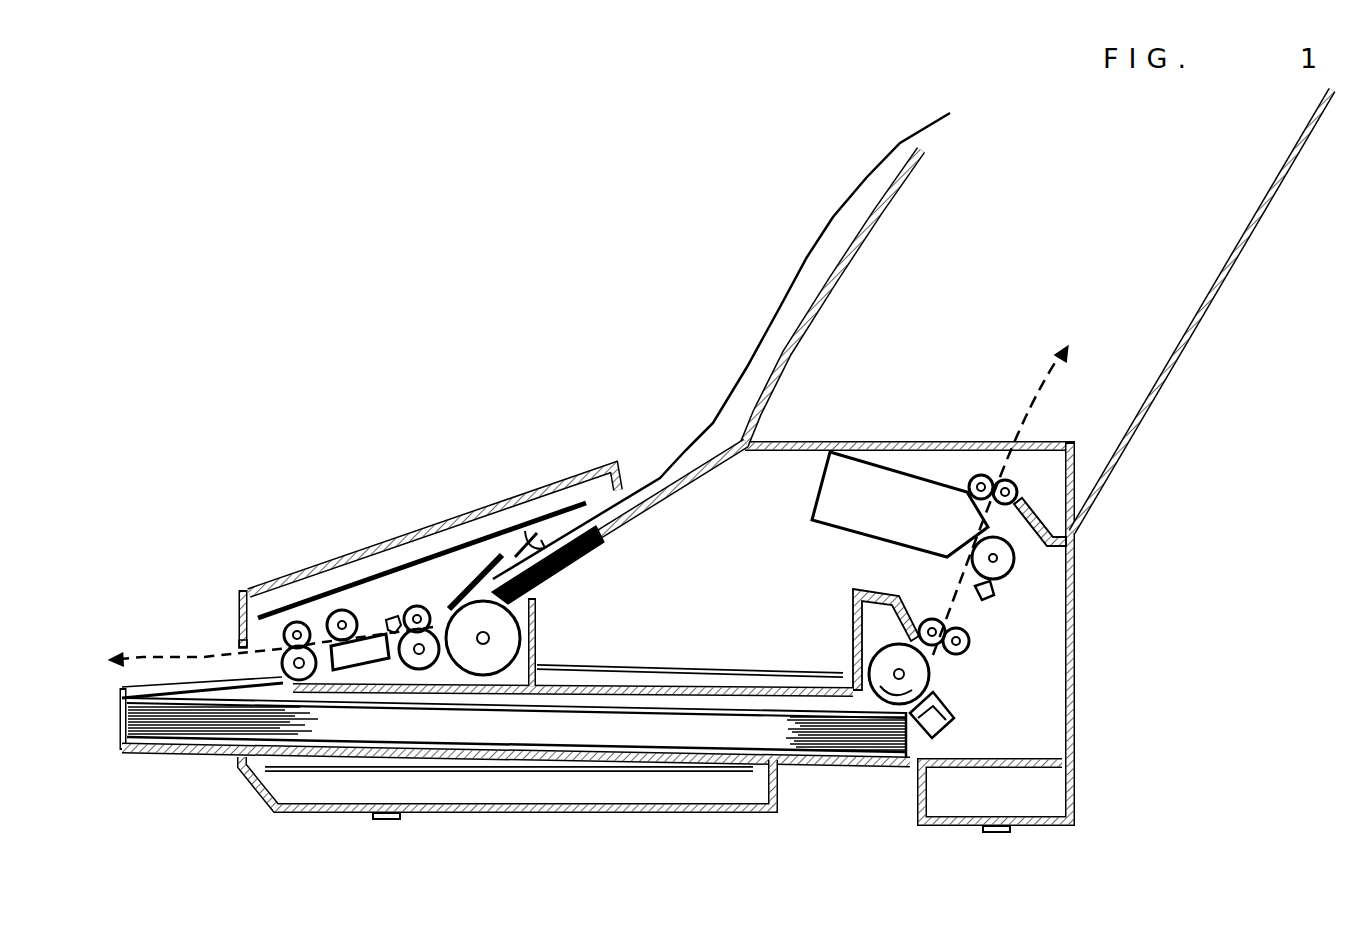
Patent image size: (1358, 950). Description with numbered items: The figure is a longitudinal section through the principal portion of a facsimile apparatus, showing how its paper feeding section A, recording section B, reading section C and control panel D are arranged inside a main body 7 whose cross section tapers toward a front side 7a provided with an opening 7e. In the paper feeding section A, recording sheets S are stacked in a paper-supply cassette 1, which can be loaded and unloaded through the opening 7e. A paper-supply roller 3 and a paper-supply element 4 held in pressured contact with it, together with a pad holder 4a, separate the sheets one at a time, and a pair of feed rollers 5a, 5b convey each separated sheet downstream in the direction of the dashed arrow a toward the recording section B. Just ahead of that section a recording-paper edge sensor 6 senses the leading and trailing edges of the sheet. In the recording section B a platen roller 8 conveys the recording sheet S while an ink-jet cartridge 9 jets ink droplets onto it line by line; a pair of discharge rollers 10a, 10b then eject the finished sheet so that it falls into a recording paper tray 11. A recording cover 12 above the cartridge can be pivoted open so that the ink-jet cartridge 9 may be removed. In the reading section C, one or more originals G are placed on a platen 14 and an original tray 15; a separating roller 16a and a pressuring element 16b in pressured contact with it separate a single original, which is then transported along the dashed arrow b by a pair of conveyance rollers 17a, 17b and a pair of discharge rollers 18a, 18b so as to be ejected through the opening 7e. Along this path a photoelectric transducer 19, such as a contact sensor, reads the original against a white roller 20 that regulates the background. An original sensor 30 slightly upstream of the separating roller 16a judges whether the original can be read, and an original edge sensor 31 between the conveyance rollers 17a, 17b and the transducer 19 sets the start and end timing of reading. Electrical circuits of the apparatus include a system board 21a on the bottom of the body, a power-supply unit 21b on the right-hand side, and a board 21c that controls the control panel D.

The paper-supply cassette 1 is at (489, 759).
The paper-supply roller 3 is at (1029, 677).
The paper-supply element 4 is at (1038, 753).
The pad holder 4a is at (1056, 725).
The feed roller 5a is at (1048, 620).
The feed roller 5b is at (1060, 646).
The recording-paper edge sensor 6 is at (1063, 582).
The main body 7 is at (507, 835).
The front side 7a is at (178, 604).
The opening 7e is at (162, 620).
The platen roller 8 is at (1073, 544).
The ink-jet cartridge 9 is at (900, 472).
The discharge roller 10a is at (1100, 468).
The discharge roller 10b is at (1118, 510).
The recording paper tray 11 is at (1202, 311).
The recording cover 12 is at (910, 587).
The platen 14 is at (672, 423).
The original tray 15 is at (833, 297).
The separating roller 16a is at (548, 502).
The pressuring element 16b is at (493, 502).
The conveyance roller 17a is at (438, 753).
The conveyance roller 17b is at (429, 513).
The discharge roller 18a is at (321, 762).
The discharge roller 18b is at (261, 560).
The photoelectric transducer 19 is at (344, 547).
The white roller 20 is at (327, 584).
The system board 21a is at (509, 832).
The power-supply unit 21b is at (573, 739).
The board for controlling the control panel 21c is at (373, 560).
The original sensor 30 is at (433, 512).
The original edge sensor 31 is at (398, 557).
The recording sheets S is at (516, 786).
The original G is at (721, 341).
The paper feeding section A is at (986, 907).
The recording section B is at (1013, 300).
The reading section C is at (367, 419).
The control panel D is at (280, 447).
The arrow a is at (1019, 500).
The arrow b is at (271, 641).